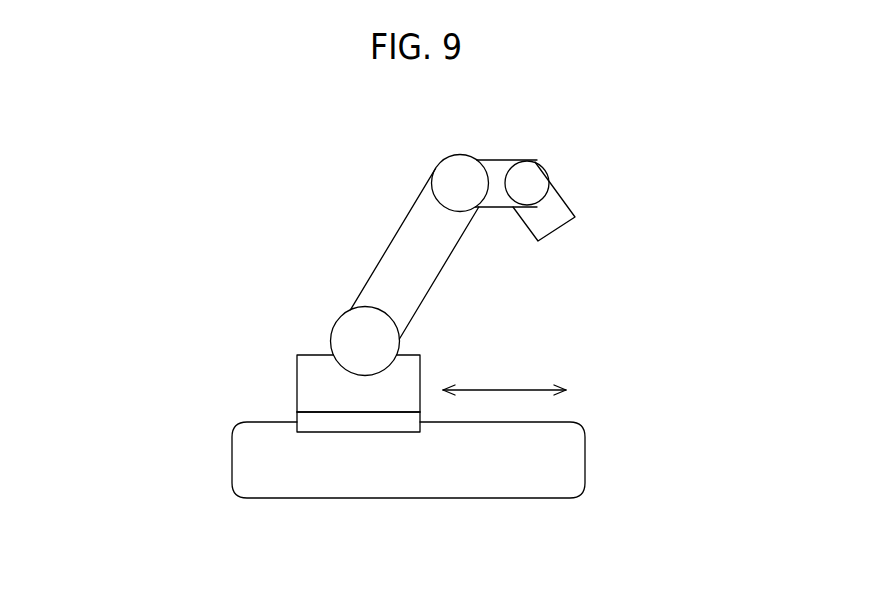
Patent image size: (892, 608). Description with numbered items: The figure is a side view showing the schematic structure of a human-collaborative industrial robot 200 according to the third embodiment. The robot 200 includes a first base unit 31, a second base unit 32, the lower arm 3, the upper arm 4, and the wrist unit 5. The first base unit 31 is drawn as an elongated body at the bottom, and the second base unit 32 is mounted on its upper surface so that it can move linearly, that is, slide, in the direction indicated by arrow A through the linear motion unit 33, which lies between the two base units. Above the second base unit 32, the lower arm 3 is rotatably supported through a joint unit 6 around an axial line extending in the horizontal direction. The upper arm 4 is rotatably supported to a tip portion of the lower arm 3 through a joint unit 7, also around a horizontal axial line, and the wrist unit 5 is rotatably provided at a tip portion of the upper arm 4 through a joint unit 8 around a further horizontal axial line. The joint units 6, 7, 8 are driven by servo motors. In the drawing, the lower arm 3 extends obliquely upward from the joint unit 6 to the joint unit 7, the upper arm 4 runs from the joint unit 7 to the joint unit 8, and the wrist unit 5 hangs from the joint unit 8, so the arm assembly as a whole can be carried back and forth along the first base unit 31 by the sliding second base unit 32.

The human-collaborative industrial robot 200 is at (252, 239).
The lower arm 3 is at (390, 243).
The upper arm 4 is at (496, 209).
The wrist unit 5 is at (562, 193).
The joint unit 6 is at (334, 323).
The joint unit 7 is at (458, 156).
The joint unit 8 is at (532, 162).
The first base unit 31 is at (430, 500).
The second base unit 32 is at (297, 390).
The linear motion unit 33 is at (335, 433).